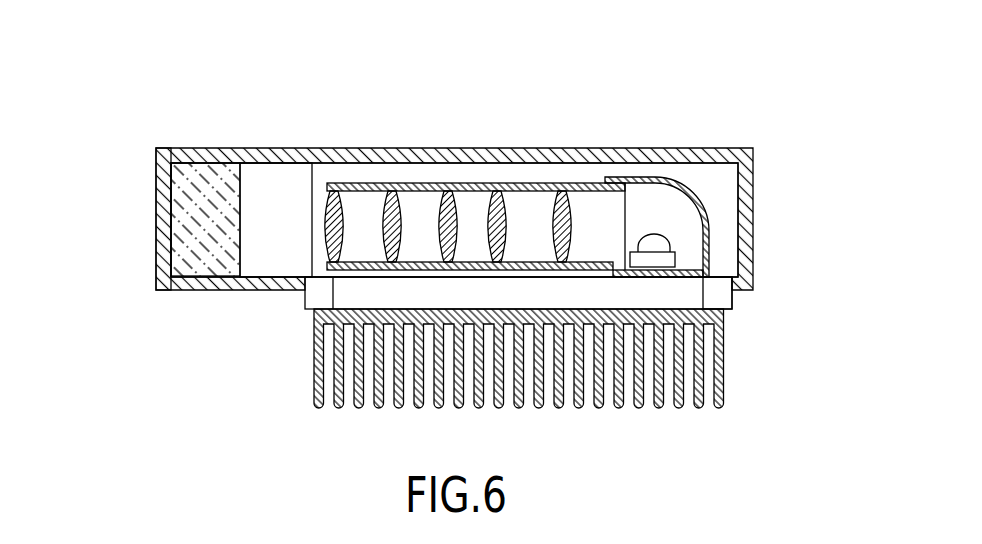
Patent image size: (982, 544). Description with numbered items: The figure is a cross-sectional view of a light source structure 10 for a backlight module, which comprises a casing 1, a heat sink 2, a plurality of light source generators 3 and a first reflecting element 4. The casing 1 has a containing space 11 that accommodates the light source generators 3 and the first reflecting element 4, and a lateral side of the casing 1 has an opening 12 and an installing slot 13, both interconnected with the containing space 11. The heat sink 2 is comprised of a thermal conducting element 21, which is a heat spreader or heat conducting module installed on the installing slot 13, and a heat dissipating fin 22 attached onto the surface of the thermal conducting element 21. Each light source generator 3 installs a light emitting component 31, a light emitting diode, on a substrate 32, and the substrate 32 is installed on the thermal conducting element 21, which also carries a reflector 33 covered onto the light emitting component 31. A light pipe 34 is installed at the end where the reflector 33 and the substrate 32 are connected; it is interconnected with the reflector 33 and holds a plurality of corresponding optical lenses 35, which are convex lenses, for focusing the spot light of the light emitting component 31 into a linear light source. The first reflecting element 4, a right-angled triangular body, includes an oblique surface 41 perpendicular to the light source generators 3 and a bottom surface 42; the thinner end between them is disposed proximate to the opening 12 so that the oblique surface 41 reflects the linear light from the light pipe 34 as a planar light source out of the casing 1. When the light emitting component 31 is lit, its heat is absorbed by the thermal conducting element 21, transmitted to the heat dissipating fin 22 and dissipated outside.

The casing 1 is at (440, 164).
The light source structure 10 is at (549, 148).
The containing space 11 is at (352, 173).
The opening 12 is at (282, 183).
The first reflecting element 4 is at (164, 188).
The oblique surface 41 is at (240, 193).
The bottom surface 42 is at (168, 203).
The light pipe 34 is at (470, 187).
The optical lens 35 is at (440, 215).
The light source generator 3 is at (705, 190).
The light emitting component 31 is at (653, 240).
The substrate 32 is at (688, 268).
The reflector 33 is at (692, 197).
The heat sink 2 is at (514, 356).
The thermal conducting element 21 is at (317, 295).
The heat dissipating fin 22 is at (314, 367).
The installing slot 13 is at (718, 292).